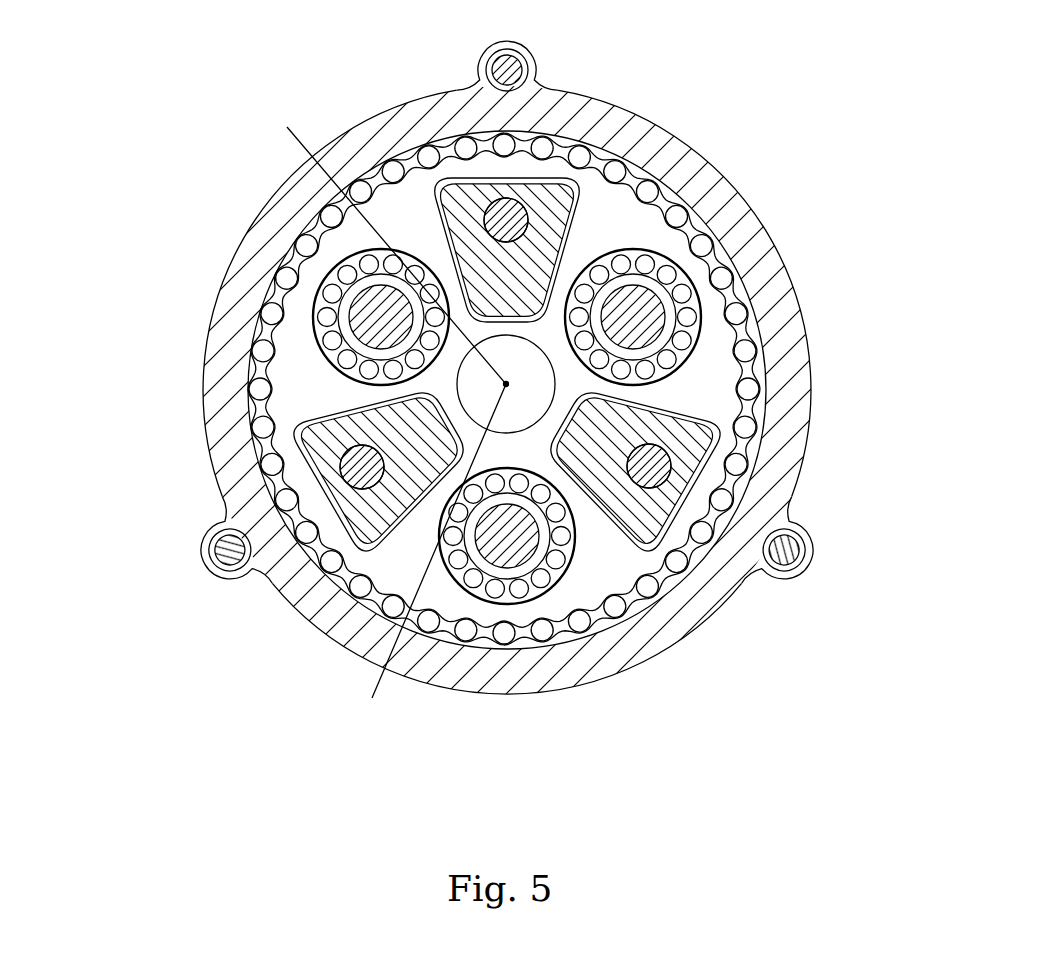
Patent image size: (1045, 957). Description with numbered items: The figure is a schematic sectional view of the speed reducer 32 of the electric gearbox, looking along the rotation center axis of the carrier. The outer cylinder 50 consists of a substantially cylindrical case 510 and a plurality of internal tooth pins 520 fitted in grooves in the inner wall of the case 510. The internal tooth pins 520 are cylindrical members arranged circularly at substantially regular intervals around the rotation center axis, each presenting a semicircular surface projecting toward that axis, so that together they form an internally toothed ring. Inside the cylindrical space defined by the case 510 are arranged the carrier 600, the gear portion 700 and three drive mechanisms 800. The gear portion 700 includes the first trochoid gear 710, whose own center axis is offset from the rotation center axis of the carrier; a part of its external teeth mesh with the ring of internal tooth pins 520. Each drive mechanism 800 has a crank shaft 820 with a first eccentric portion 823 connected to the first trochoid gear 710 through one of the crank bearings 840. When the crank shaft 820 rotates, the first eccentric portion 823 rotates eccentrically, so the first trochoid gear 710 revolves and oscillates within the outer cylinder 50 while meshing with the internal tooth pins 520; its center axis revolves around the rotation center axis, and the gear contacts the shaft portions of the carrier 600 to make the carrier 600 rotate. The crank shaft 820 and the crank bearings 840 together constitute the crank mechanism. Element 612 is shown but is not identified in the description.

The speed reducer 32 is at (522, 478).
The outer cylinder 50 is at (522, 478).
The case 510 is at (806, 408).
The internal tooth pins 520 is at (486, 417).
The carrier 600 is at (662, 608).
The ring gear portion 612 is at (600, 150).
The gear portion 700 is at (310, 623).
The first trochoid gear 710 is at (632, 565).
The drive mechanisms 800 is at (486, 417).
The crank shaft 820 is at (486, 472).
The first eccentric portion 823 is at (504, 389).
The crank bearings 840 is at (318, 288).